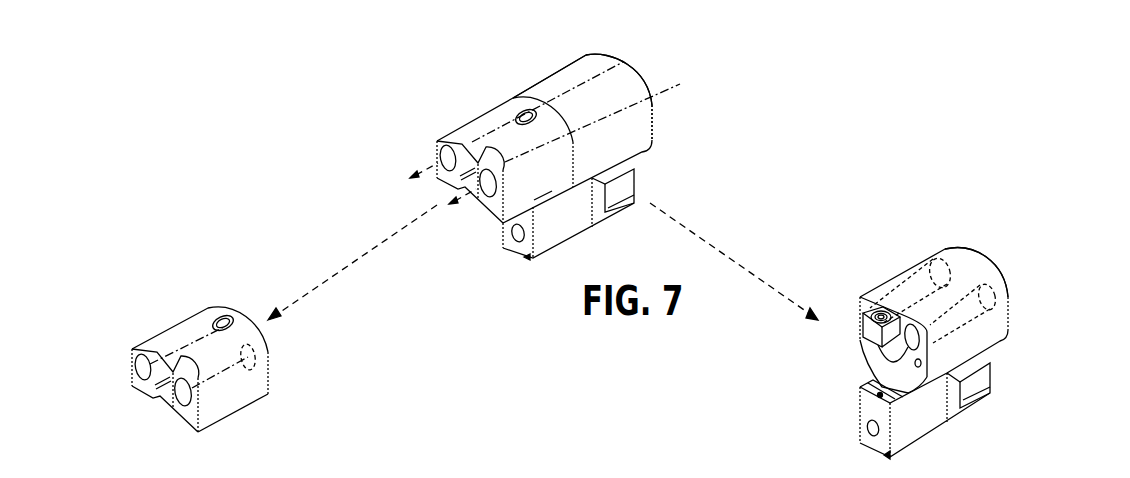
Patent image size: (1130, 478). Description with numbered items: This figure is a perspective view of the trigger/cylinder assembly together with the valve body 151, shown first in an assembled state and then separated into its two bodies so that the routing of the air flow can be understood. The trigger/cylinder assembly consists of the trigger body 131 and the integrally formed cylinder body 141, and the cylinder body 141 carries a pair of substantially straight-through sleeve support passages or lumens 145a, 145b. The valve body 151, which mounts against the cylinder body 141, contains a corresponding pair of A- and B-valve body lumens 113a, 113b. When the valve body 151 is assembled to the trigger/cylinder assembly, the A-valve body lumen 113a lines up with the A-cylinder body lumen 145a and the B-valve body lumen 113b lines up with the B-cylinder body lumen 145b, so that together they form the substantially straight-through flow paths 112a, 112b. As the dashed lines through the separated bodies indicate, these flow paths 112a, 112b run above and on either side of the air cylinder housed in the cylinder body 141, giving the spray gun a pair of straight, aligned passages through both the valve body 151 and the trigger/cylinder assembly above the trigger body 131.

The valve body 151 is at (190, 333).
The B-valve body lumen 113b is at (140, 363).
The A-valve body lumen 113a is at (186, 398).
The cylinder body 141 is at (607, 75).
The straight-through flow path 112b is at (555, 98).
The straight-through flow path 112a is at (603, 120).
The trigger body 131 is at (580, 217).
The B-cylinder body lumen 145b is at (865, 309).
The A-cylinder body lumen 145a is at (917, 343).